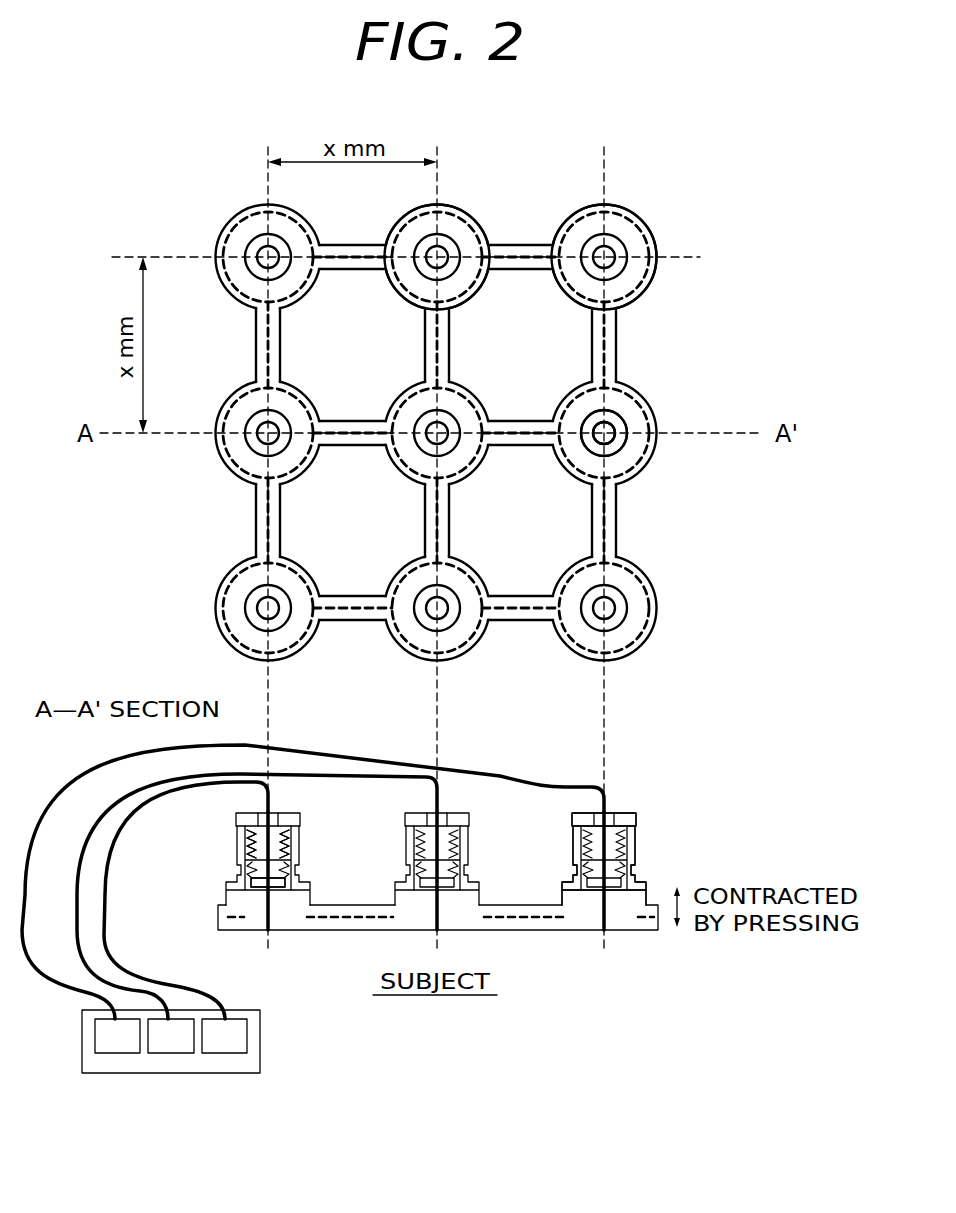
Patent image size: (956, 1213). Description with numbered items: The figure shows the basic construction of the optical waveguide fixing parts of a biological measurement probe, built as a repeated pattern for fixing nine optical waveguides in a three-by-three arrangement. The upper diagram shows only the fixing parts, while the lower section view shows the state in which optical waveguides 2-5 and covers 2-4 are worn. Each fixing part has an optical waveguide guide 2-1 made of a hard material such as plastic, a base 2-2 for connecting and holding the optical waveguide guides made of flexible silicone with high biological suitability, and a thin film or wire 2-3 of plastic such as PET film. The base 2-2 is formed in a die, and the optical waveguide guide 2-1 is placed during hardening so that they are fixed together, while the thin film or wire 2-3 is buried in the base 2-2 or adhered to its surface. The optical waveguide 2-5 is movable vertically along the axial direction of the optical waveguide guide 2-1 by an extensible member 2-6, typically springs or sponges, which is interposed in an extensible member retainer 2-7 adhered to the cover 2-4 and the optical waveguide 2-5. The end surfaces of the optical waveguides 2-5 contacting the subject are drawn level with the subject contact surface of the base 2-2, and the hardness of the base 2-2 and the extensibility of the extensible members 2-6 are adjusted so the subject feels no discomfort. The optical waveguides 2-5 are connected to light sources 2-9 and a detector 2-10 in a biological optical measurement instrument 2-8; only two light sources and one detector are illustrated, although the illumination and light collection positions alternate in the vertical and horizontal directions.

The optical waveguide guide 2-1 is at (623, 422).
The base for connecting and holding the optical waveguide guides 2-2 is at (655, 236).
The thin film or wire 2-3 is at (472, 227).
The cover 2-4 is at (622, 812).
The optical waveguide 2-5 is at (563, 783).
The extensible member 2-6 is at (248, 836).
The extensible member retainer 2-7 is at (248, 882).
The biological optical measurement instrument 2-8 is at (261, 1040).
The light source 2-9 is at (117, 1043).
The detector 2-10 is at (175, 1045).